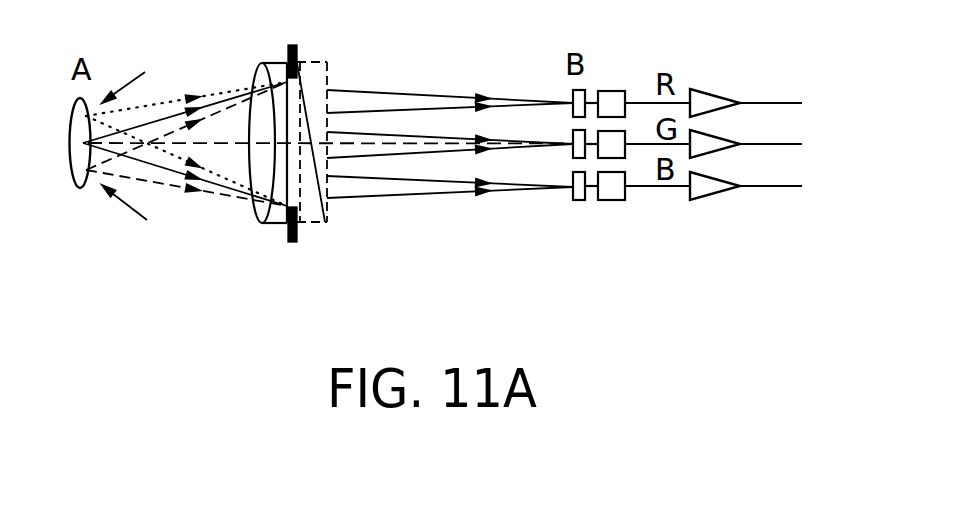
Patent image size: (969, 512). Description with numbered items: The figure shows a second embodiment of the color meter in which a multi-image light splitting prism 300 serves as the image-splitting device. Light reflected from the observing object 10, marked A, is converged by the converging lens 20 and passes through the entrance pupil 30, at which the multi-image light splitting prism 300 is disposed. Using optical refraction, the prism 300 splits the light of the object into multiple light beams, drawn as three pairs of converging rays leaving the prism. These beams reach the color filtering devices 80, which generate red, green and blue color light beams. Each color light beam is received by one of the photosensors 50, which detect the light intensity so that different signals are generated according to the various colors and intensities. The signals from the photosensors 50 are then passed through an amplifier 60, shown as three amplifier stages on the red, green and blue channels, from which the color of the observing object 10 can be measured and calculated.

The observing object 10 is at (77, 184).
The converging lens 20 is at (253, 202).
The entrance pupil 30 is at (297, 236).
The multi-image light splitting prism 300 is at (313, 80).
The color filtering devices 80 is at (589, 145).
The photosensors 50 is at (625, 110).
The amplifier 60 is at (720, 177).